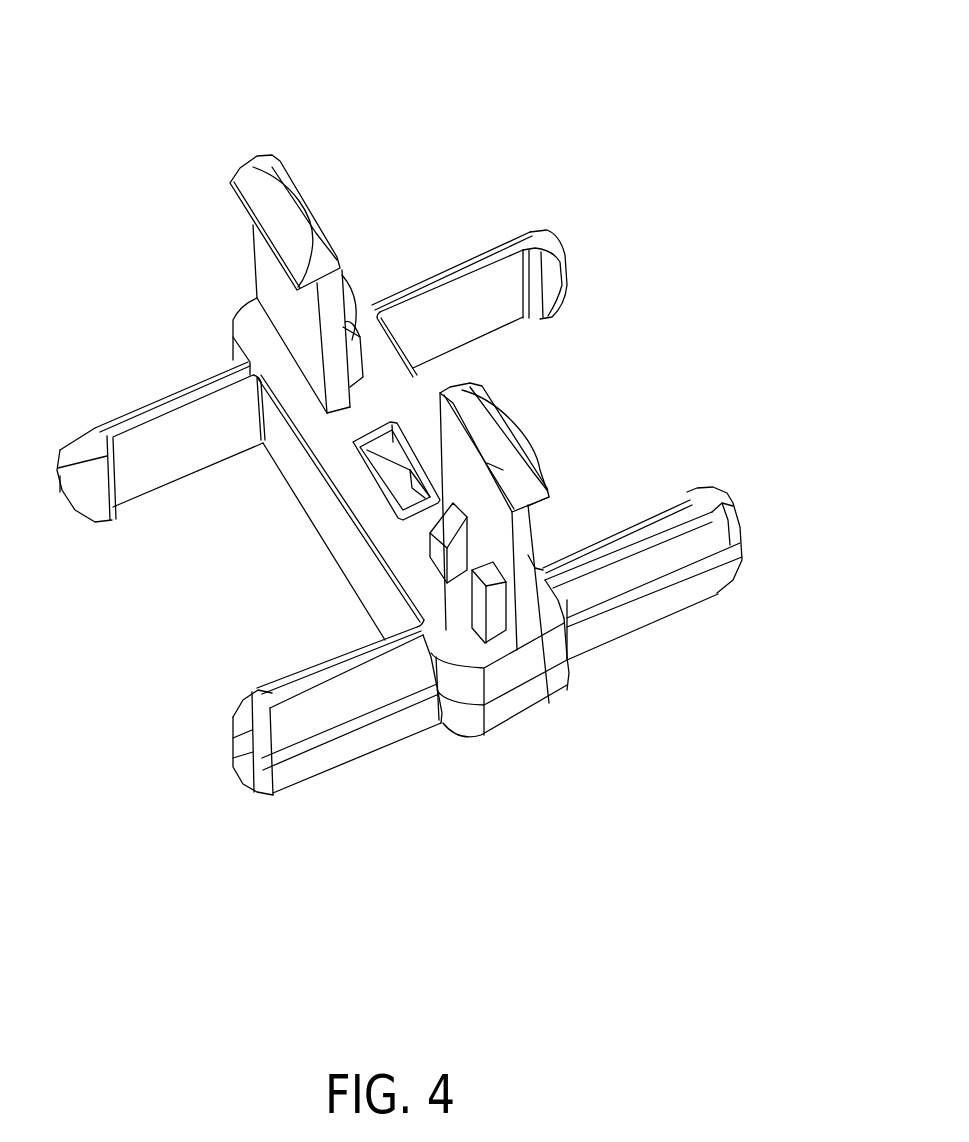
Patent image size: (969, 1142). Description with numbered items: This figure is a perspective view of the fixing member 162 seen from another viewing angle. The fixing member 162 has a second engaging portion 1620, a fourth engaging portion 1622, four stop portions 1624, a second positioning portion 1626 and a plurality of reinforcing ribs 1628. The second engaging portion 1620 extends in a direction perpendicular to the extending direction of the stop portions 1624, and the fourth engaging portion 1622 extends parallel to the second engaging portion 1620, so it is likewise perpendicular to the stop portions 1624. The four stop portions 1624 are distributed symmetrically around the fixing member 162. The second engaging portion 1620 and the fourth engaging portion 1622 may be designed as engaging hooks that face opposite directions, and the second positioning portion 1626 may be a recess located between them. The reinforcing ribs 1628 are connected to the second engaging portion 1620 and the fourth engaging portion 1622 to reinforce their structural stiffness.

The fixing member 162 is at (465, 89).
The second engaging portion 1620 is at (253, 192).
The fourth engaging portion 1622 is at (503, 438).
The stop portions 1624 is at (507, 237).
The second positioning portion 1626 is at (370, 478).
The reinforcing ribs 1628 is at (352, 353).